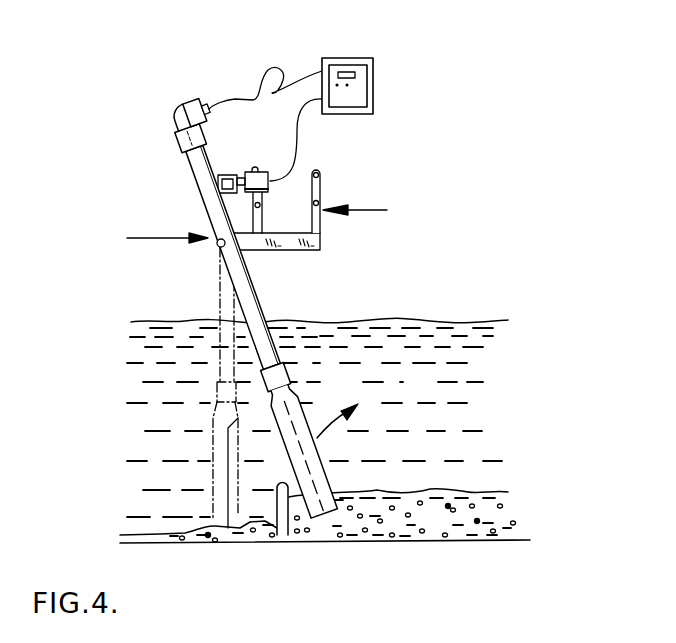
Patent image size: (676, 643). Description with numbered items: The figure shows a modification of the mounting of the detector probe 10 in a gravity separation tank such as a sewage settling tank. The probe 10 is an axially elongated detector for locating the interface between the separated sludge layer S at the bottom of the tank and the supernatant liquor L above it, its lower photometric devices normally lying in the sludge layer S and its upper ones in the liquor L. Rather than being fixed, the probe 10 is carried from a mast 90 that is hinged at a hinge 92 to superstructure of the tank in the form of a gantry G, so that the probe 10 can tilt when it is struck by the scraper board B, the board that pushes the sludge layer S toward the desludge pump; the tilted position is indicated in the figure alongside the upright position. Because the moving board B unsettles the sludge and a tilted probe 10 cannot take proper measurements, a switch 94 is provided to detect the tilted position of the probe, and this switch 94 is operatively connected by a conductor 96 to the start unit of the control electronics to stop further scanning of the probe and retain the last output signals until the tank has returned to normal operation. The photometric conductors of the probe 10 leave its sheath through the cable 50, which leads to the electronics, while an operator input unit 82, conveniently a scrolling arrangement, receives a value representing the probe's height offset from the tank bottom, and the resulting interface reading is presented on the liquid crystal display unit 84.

The detector probe 10 is at (290, 384).
The cable 50 is at (230, 97).
The operator input unit 82 is at (360, 86).
The liquid crystal display unit 84 is at (350, 71).
The mast 90 is at (195, 179).
The hinge 92 is at (220, 249).
The switch 94 is at (252, 170).
The conductor 96 is at (300, 133).
The gantry G is at (322, 190).
The supernatant liquor L is at (317, 421).
The sludge layer S is at (325, 516).
The scraper board B is at (283, 541).